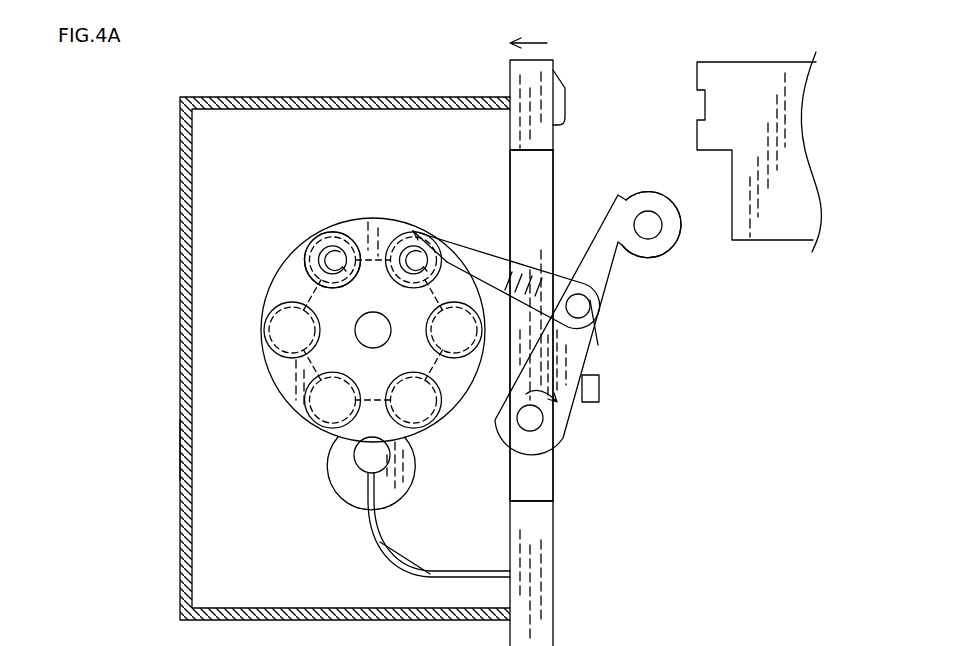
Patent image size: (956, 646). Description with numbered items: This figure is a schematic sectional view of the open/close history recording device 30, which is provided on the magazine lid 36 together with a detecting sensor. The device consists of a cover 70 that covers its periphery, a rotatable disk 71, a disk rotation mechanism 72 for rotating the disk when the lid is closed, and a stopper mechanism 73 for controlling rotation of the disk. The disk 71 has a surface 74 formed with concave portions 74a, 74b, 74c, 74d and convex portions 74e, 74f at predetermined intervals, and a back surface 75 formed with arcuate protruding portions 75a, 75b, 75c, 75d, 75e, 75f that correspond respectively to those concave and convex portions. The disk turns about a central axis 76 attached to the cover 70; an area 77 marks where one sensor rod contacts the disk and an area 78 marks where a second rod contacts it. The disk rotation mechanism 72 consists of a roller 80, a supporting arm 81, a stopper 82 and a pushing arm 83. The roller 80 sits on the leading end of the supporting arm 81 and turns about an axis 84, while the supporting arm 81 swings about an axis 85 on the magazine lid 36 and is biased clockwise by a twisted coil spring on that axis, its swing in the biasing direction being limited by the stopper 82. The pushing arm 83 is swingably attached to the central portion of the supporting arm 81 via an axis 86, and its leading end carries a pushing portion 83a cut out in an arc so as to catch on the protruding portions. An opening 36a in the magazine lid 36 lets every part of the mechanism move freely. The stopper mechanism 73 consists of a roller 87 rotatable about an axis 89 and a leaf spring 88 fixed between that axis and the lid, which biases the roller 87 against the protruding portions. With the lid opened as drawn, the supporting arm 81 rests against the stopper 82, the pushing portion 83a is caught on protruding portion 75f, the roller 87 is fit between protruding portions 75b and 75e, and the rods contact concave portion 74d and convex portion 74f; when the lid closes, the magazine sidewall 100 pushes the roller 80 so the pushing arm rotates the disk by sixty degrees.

The open/close history recording device 30 is at (178, 457).
The magazine lid 36 is at (556, 70).
The opening 36a is at (546, 484).
The cover 70 is at (180, 344).
The disk 71 is at (278, 393).
The disk rotation mechanism 72 is at (604, 322).
The stopper mechanism 73 is at (383, 540).
The surface 74 is at (296, 258).
The concave portion 74a is at (452, 362).
The concave portion 74b is at (419, 432).
The concave portion 74c is at (290, 279).
The concave portion 74d is at (329, 233).
The convex portion 74e is at (309, 416).
The convex portion 74f is at (410, 233).
The back surface 75 is at (262, 263).
The protruding portion 75a is at (458, 355).
The protruding portion 75b is at (438, 426).
The protruding portion 75c is at (269, 302).
The protruding portion 75d is at (313, 236).
The protruding portion 75e is at (323, 432).
The protruding portion 75f is at (399, 233).
The central axis 76 is at (360, 342).
The area 77 is at (341, 274).
The area 78 is at (410, 274).
The roller 80 is at (680, 237).
The supporting arm 81 is at (590, 348).
The stopper 82 is at (599, 391).
The pushing arm 83 is at (490, 253).
The pushing portion 83a is at (451, 236).
The axis 84 is at (655, 239).
The axis 85 is at (542, 426).
The axis 86 is at (591, 307).
The roller 87 is at (330, 479).
The leaf spring 88 is at (436, 564).
The axis 89 is at (356, 471).
The magazine sidewall 100 is at (786, 243).